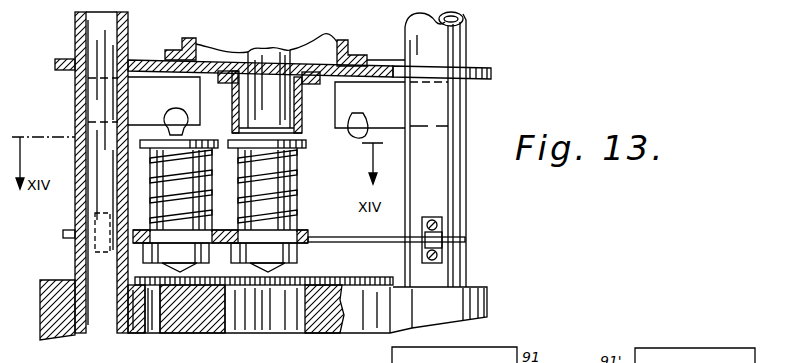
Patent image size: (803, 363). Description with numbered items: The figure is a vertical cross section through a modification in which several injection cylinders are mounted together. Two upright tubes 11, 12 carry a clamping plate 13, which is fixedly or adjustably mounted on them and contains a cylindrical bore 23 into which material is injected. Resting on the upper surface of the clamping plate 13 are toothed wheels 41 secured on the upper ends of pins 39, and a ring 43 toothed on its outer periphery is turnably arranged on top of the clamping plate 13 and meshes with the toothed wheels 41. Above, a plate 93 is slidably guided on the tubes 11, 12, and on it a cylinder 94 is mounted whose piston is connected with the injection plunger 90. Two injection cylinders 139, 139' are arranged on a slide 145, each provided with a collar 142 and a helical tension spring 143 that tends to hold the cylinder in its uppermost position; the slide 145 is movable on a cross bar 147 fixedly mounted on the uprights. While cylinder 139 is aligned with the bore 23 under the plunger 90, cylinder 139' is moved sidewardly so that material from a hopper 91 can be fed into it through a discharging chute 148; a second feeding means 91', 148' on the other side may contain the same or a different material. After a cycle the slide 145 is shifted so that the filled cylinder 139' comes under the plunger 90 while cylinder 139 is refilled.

The tube 11 is at (75, 25).
The tube 12 is at (452, 45).
The clamping plate 13 is at (487, 290).
The cylindrical bore 23 is at (256, 325).
The pins 39 is at (147, 327).
The toothed wheels 41 is at (157, 328).
The ring 43 is at (297, 283).
The injection plunger 90 is at (268, 60).
The hopper 91 is at (164, 101).
The feeding means 91' is at (370, 105).
The plate 93 is at (135, 59).
The cylinder 94 is at (196, 48).
The injection cylinder 139 is at (291, 190).
The injection cylinder 139' is at (124, 186).
The collar 142 is at (305, 146).
The helical tension spring 143 is at (298, 197).
The slide 145 is at (303, 230).
The cross bar 147 is at (332, 242).
The discharging chute 148 is at (199, 123).
The discharging chute 148' is at (336, 125).